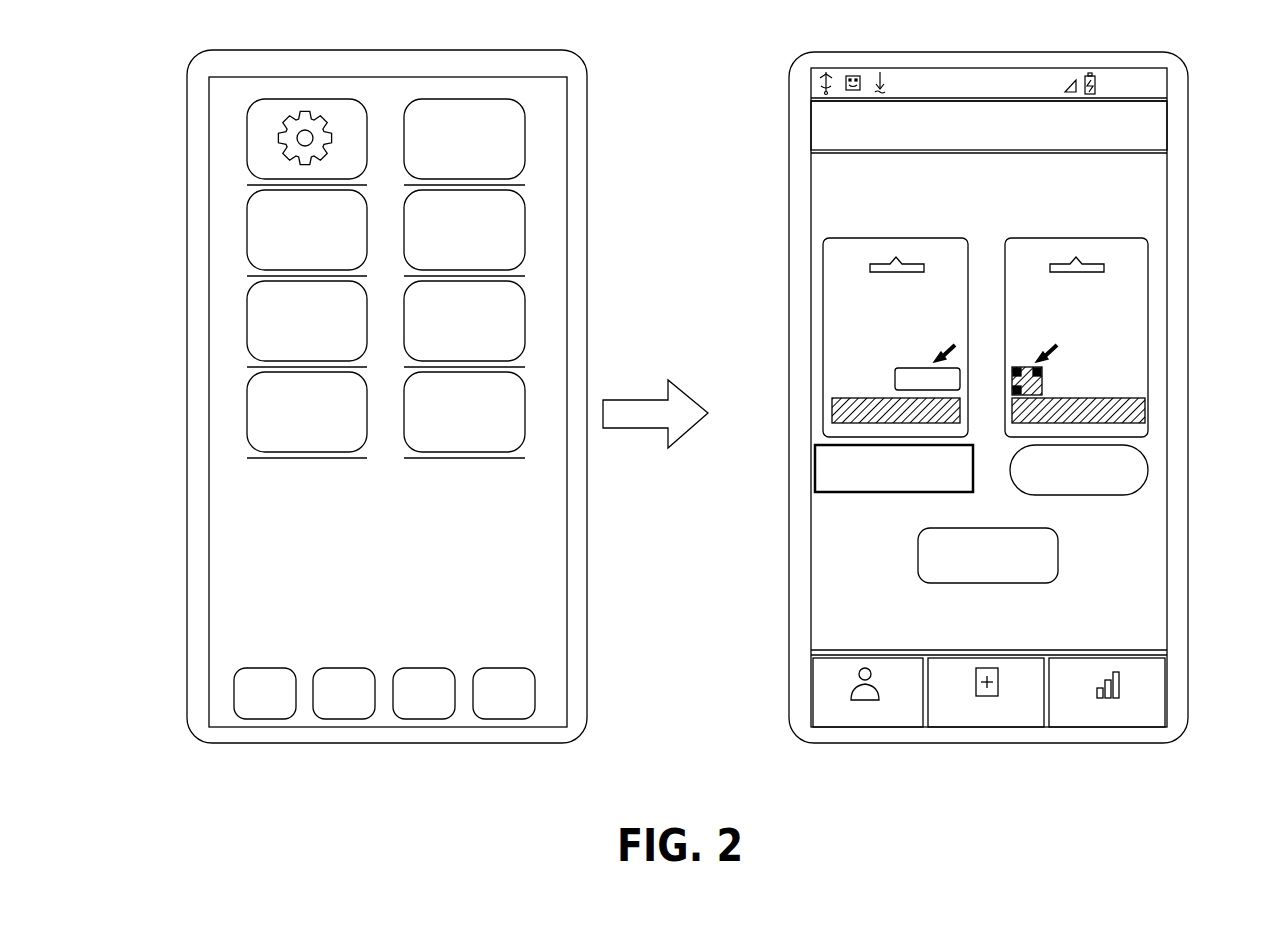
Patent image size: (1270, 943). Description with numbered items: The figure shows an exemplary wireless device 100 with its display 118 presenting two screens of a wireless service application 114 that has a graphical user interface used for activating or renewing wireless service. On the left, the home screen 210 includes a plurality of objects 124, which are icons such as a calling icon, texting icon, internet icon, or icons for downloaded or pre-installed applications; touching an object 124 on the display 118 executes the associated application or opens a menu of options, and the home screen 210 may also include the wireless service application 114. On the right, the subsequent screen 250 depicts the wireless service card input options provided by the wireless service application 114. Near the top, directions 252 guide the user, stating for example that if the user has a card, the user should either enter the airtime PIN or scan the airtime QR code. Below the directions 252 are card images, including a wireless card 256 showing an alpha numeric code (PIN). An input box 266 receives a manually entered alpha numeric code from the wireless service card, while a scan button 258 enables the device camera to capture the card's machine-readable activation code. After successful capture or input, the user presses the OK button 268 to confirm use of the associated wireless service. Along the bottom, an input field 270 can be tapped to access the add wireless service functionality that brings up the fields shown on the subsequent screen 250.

The wireless device 100 is at (369, 29).
The display 118 is at (222, 570).
The object 124 is at (236, 164).
The home screen 210 is at (321, 459).
The subsequent screen 250 is at (979, 444).
The wireless service application 114 is at (825, 123).
The directions 252 is at (828, 182).
The wireless card image 256 is at (838, 288).
The input box 266 is at (830, 478).
The scan button 258 is at (1133, 470).
The OK button 268 is at (1038, 558).
The input field 270 is at (1022, 685).